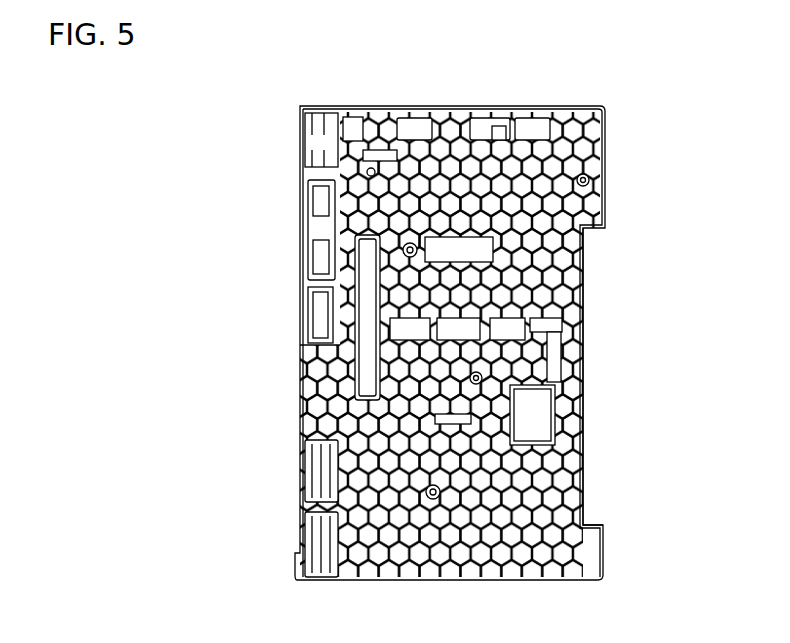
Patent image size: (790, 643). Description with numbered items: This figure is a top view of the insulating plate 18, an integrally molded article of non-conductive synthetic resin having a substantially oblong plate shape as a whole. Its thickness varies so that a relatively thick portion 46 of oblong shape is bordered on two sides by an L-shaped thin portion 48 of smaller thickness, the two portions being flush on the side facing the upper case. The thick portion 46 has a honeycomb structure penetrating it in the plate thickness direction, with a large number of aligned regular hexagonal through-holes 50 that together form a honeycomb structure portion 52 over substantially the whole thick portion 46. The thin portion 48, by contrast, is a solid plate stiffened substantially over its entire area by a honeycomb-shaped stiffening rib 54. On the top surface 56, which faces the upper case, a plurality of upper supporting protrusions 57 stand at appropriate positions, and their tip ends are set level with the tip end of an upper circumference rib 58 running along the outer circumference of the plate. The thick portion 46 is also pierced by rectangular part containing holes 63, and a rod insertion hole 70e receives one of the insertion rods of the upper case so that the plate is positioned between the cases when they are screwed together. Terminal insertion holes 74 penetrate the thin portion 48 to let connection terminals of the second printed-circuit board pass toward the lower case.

The insulating plate 18 is at (608, 86).
The thick portion 46 is at (612, 260).
The thin portion 48 is at (298, 156).
The regular hexagonal through-holes 50 is at (478, 128).
The honeycomb structure portion 52 is at (605, 410).
The stiffening rib 54 is at (500, 126).
The top surface 56 is at (332, 372).
The upper supporting protrusions 57 is at (442, 232).
The upper circumference rib 58 is at (314, 208).
The part containing holes 63 is at (563, 325).
The rod insertion hole 70e is at (590, 182).
The terminal insertion holes 74 is at (382, 147).